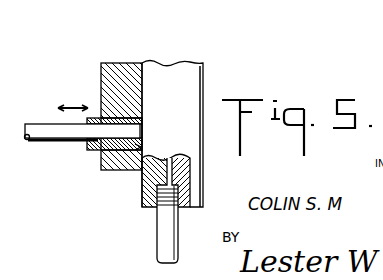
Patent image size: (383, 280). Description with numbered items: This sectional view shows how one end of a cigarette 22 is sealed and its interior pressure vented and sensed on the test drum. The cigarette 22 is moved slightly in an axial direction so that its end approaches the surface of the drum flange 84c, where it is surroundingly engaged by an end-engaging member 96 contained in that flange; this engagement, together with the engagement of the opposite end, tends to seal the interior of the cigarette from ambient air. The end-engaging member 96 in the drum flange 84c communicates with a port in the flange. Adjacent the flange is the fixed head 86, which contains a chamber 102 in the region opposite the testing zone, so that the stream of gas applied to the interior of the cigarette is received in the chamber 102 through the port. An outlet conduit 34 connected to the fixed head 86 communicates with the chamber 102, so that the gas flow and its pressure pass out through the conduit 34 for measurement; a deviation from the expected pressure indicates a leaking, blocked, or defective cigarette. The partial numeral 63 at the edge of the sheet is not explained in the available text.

The cigarette 22 is at (33, 114).
The outlet conduit 34 is at (160, 236).
The shaft 63 is at (375, 62).
The drum flange 84c is at (101, 68).
The fixed head 86 is at (182, 81).
The end-engaging member 96 is at (90, 150).
The chamber 102 is at (142, 183).